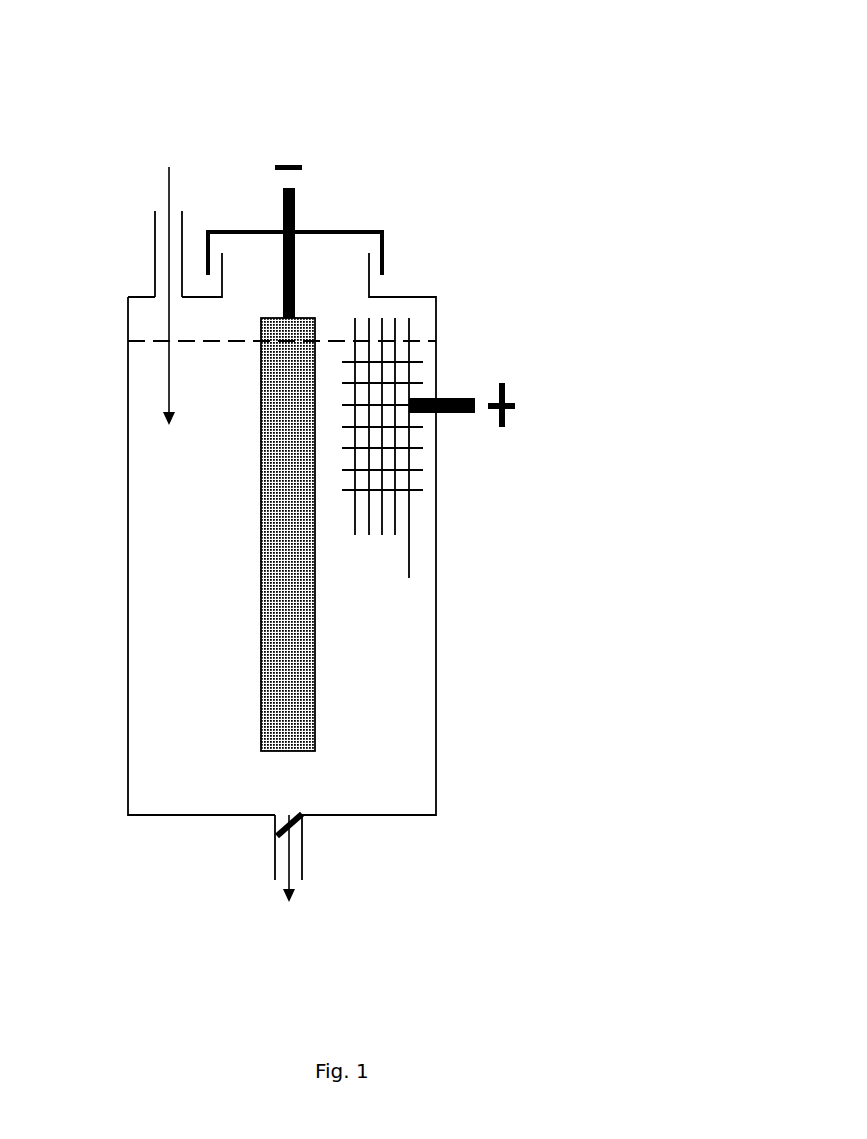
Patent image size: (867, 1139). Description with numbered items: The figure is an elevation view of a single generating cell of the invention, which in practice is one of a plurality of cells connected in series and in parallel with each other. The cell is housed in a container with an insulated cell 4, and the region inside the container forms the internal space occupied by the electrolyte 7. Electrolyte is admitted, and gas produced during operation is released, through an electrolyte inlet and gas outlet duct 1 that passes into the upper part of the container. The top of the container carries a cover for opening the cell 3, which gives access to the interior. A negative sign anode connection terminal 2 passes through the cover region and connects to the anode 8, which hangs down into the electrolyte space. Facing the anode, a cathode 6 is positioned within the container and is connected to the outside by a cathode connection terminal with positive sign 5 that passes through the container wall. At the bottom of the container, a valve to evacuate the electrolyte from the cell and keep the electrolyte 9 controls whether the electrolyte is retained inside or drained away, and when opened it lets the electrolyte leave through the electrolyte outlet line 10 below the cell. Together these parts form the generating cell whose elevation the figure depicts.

The electrolyte inlet and gas outlet duct 1 is at (182, 167).
The negative sign anode connection terminal 2 is at (303, 188).
The cover for opening the cell 3 is at (382, 232).
The container with an insulated cell 4 is at (436, 297).
The cathode connection terminal with positive sign 5 is at (462, 425).
The cathode 6 is at (409, 512).
The internal space occupied by the electrolyte 7 is at (183, 489).
The anode 8 is at (285, 645).
The valve to evacuate the electrolyte from the cell and keep the electrolyte 9 is at (277, 836).
The electrolyte outlet line 10 is at (302, 900).